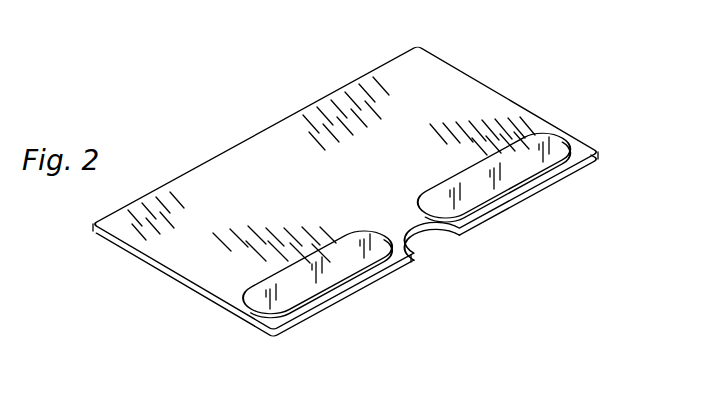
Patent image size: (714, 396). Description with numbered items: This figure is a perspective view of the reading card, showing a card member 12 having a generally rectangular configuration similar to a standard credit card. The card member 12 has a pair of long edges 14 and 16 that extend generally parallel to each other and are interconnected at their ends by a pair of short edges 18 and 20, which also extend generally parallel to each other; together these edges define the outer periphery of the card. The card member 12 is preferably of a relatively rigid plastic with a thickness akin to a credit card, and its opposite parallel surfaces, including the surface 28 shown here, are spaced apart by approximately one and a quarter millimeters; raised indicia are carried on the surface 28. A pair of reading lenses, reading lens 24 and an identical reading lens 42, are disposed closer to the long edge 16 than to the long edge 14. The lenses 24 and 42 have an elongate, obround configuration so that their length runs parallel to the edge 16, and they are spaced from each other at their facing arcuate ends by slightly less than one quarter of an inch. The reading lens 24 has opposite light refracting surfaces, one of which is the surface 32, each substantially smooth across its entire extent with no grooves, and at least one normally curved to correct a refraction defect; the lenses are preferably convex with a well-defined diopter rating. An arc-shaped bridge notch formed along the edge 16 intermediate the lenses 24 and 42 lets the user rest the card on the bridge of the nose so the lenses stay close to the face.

The card member 12 is at (222, 281).
The long edge 14 is at (217, 153).
The long edge 16 is at (398, 271).
The short edge 18 is at (150, 269).
The short edge 20 is at (489, 82).
The reading lens 24 is at (343, 259).
The surface 28 is at (363, 206).
The light refracting surface 32 is at (266, 301).
The reading lens 42 is at (505, 178).